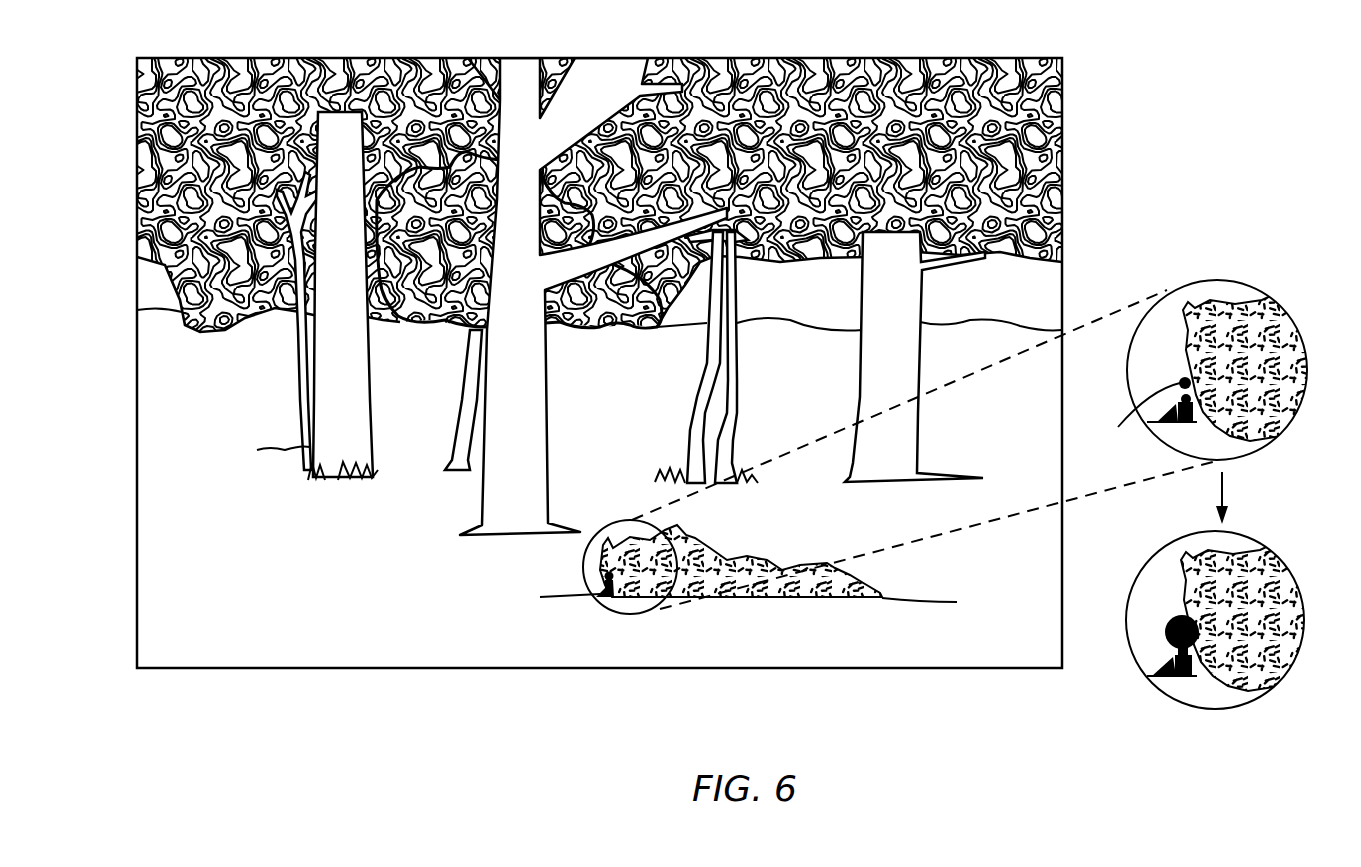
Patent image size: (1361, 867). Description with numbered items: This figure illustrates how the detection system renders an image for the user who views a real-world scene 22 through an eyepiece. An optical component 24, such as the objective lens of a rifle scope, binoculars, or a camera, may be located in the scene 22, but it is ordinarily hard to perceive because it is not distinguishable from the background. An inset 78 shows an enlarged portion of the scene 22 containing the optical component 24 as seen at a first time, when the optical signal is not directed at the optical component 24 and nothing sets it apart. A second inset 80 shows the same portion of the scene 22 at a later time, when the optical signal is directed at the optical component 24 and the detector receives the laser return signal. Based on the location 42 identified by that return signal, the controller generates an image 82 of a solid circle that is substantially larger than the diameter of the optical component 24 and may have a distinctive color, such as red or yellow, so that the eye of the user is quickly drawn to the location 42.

The real-world scene 22 is at (977, 60).
The optical component 24 is at (610, 578).
The location 42 is at (596, 566).
The inset 78 is at (1263, 297).
The inset 80 is at (1265, 553).
The image 82 is at (1168, 638).